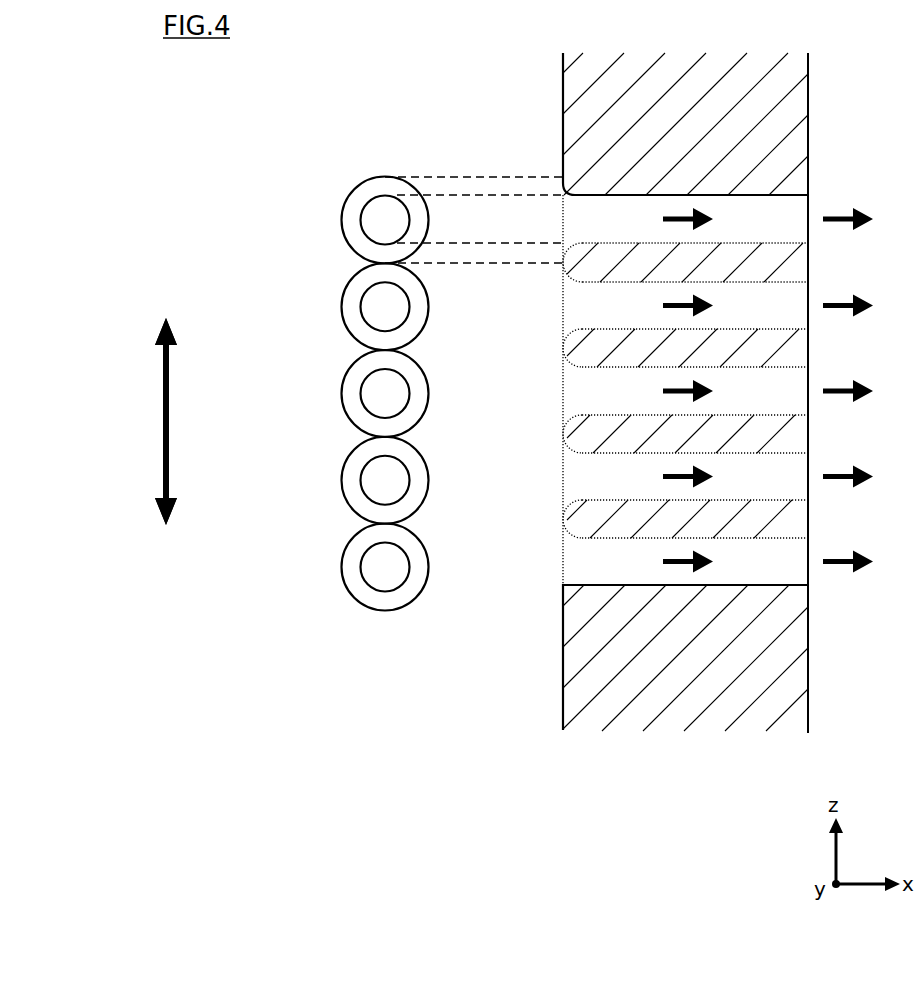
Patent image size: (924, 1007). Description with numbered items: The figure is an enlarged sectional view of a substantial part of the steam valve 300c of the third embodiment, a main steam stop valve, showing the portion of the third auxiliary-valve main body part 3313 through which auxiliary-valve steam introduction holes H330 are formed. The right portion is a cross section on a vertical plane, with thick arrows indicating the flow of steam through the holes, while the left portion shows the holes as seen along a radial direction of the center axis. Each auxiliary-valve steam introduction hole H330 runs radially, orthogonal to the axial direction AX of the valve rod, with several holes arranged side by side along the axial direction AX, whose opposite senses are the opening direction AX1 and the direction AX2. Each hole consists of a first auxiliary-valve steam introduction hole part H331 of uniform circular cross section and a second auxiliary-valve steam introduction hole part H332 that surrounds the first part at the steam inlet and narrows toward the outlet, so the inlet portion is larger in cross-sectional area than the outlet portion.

The steam valve 300c is at (545, 14).
The third auxiliary-valve main body part 3313 is at (792, 110).
The auxiliary-valve steam introduction hole H330 is at (460, 713).
The first auxiliary-valve steam introduction hole part H331 is at (390, 592).
The second auxiliary-valve steam introduction hole part H332 is at (357, 602).
The axial direction AX is at (162, 423).
The opening direction AX1 is at (159, 319).
The second axial direction AX2 is at (159, 529).